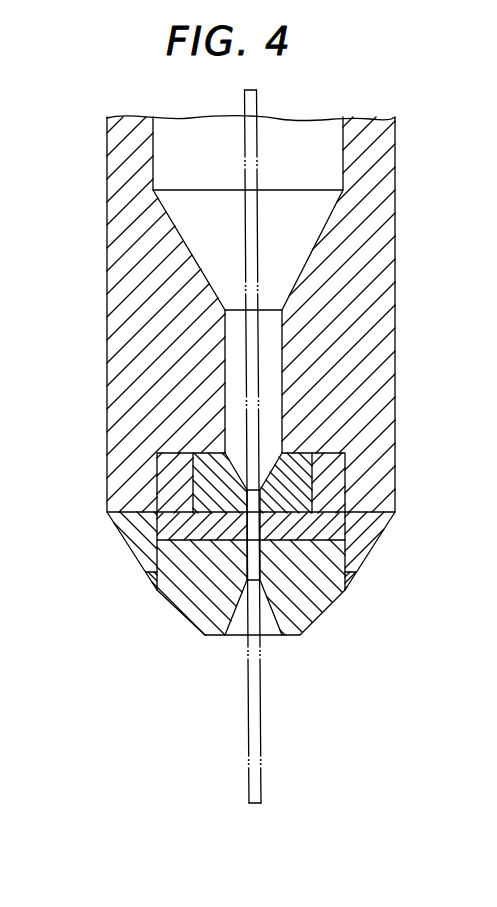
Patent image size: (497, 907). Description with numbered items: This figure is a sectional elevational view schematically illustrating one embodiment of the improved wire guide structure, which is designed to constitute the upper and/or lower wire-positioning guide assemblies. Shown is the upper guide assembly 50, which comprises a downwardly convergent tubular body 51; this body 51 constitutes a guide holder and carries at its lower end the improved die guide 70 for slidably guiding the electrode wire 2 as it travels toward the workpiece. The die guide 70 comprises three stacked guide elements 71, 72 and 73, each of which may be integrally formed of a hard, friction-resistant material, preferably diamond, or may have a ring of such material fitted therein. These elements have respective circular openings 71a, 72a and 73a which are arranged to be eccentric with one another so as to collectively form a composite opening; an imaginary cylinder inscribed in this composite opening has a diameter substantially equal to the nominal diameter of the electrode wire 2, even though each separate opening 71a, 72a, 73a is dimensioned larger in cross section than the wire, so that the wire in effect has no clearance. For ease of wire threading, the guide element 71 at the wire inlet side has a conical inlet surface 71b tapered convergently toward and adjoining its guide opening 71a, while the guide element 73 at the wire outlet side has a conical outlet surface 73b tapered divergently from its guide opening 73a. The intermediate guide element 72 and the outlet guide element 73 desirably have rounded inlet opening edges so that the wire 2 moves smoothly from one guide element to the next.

The electrode wire 2 is at (261, 697).
The upper wire-positioning guide assembly 50 is at (222, 734).
The downwardly convergent body 51 is at (107, 268).
The die guide 70 is at (195, 636).
The guide element 71 is at (291, 458).
The circular opening 71a is at (264, 500).
The conical inlet surface 71b is at (236, 464).
The intermediate guide element 72 is at (333, 522).
The circular opening 72a is at (263, 523).
The guide element 73 is at (333, 592).
The circular opening 73a is at (263, 573).
The conical outlet surface 73b is at (227, 613).